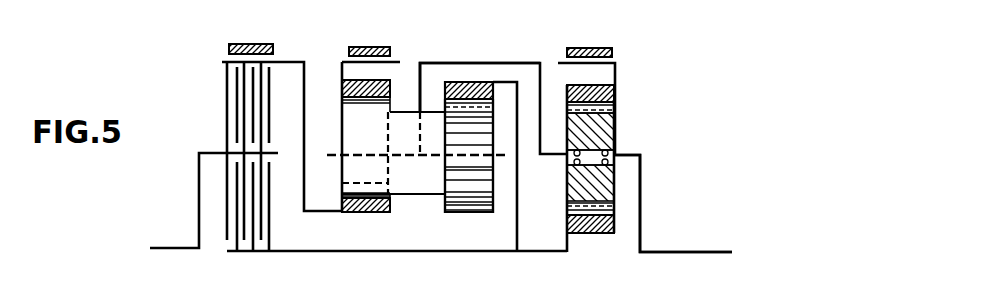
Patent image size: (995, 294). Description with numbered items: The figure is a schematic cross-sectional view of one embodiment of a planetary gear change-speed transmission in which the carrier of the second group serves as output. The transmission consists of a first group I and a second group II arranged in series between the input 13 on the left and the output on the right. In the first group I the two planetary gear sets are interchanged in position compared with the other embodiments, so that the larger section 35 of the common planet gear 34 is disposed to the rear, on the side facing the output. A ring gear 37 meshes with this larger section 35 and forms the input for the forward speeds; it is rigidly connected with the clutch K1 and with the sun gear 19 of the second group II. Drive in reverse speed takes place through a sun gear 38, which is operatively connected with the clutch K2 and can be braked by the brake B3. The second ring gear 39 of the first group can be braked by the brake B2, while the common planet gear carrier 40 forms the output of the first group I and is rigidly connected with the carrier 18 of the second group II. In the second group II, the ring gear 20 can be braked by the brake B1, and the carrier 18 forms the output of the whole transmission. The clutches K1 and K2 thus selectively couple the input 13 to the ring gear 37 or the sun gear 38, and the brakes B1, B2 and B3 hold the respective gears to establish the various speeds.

The input 13 is at (168, 250).
The carrier of the second group 18 is at (640, 203).
The sun gear of the second group 19 is at (585, 225).
The ring gear of the second group 20 is at (570, 88).
The common planet gear 34 is at (413, 197).
The larger section of the common planet gear 35 is at (477, 183).
The ring gear 37 is at (463, 82).
The sun gear 38 is at (368, 207).
The second ring gear 39 is at (344, 90).
The common planet gear carrier 40 is at (420, 72).
The brake B1 is at (602, 50).
The brake B2 is at (370, 45).
The brake B3 is at (262, 43).
The clutch K1 is at (252, 207).
The clutch K2 is at (252, 93).
The first group I is at (484, 80).
The second group II is at (628, 120).